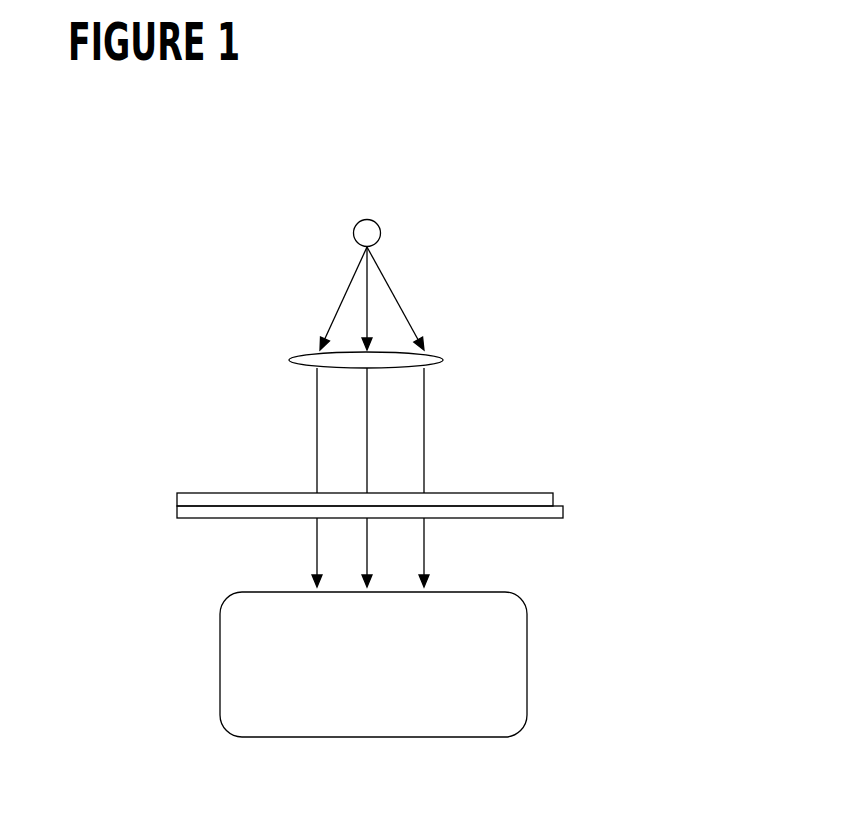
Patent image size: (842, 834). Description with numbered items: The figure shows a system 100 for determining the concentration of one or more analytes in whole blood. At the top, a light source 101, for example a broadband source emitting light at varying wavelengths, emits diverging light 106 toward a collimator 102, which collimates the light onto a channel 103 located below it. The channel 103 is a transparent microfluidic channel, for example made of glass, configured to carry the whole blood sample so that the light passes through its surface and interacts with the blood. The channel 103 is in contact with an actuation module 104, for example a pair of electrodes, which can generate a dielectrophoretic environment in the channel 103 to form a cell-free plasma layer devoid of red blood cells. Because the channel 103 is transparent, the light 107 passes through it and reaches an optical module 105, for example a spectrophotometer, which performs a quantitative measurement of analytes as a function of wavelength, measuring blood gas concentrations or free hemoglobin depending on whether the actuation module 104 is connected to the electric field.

The system 100 is at (607, 157).
The light source 101 is at (380, 223).
The collimator 102 is at (452, 351).
The channel 103 is at (210, 492).
The actuation module 104 is at (564, 512).
The optical module 105 is at (529, 648).
The light 106 is at (327, 317).
The light 107 is at (312, 553).